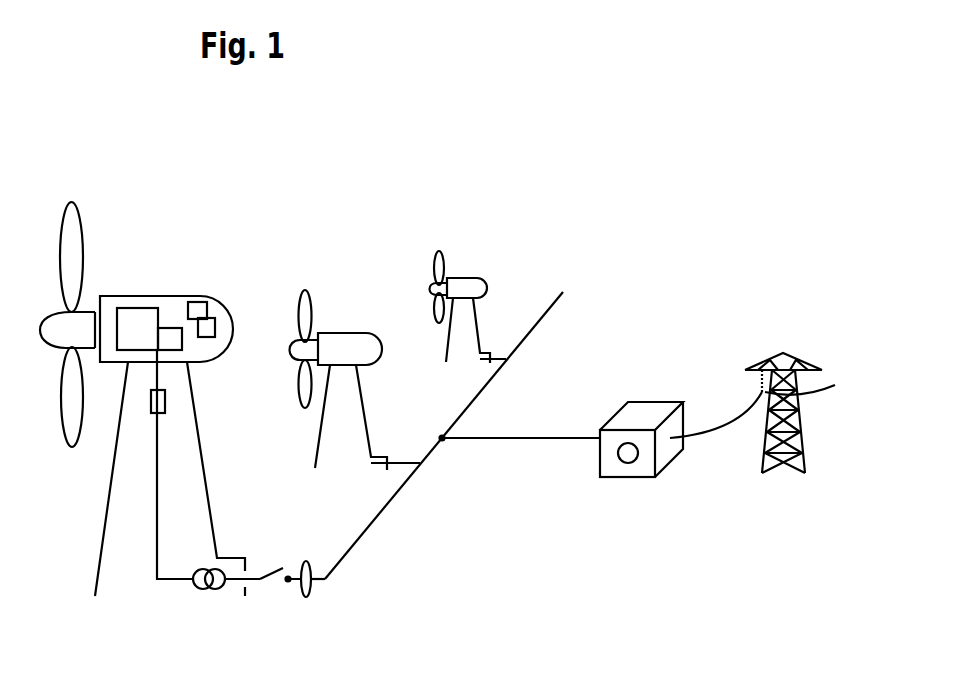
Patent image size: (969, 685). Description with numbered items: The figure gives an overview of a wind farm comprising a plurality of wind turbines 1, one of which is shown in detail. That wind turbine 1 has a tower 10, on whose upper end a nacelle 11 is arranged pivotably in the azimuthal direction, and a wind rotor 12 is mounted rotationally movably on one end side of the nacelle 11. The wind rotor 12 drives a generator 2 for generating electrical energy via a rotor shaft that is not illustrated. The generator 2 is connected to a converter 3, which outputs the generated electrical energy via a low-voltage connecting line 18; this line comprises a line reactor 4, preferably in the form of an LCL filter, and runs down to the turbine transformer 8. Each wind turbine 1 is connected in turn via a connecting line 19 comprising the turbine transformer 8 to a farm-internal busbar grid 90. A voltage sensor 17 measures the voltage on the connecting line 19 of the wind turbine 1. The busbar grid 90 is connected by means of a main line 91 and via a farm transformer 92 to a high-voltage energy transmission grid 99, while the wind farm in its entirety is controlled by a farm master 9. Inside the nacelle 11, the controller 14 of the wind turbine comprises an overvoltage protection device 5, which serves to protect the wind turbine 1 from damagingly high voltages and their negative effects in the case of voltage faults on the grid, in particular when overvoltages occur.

The wind turbine 1 is at (222, 300).
The generator 2 is at (130, 318).
The converter 3 is at (180, 342).
The line reactor 4 is at (155, 417).
The overvoltage protection device 5 is at (213, 325).
The turbine transformer 8 is at (192, 583).
The farm master 9 is at (645, 410).
The tower 10 is at (107, 508).
The nacelle 11 is at (165, 296).
The wind rotor 12 is at (57, 322).
The controller 14 is at (200, 303).
The voltage sensor 17 is at (310, 593).
The low-voltage connecting line 18 is at (157, 532).
The connecting line 19 is at (230, 582).
The busbar grid 90 is at (370, 525).
The main line 91 is at (556, 438).
The farm transformer 92 is at (628, 458).
The high-voltage energy transmission grid 99 is at (760, 395).